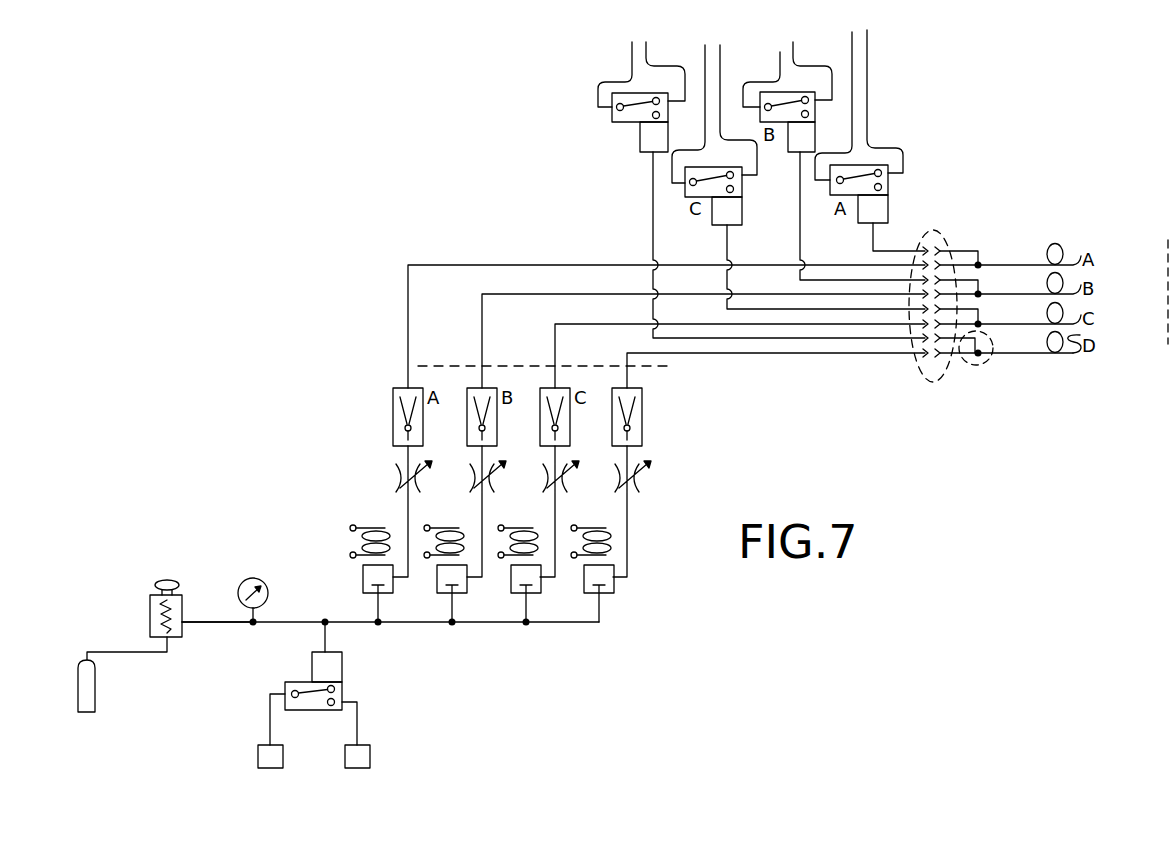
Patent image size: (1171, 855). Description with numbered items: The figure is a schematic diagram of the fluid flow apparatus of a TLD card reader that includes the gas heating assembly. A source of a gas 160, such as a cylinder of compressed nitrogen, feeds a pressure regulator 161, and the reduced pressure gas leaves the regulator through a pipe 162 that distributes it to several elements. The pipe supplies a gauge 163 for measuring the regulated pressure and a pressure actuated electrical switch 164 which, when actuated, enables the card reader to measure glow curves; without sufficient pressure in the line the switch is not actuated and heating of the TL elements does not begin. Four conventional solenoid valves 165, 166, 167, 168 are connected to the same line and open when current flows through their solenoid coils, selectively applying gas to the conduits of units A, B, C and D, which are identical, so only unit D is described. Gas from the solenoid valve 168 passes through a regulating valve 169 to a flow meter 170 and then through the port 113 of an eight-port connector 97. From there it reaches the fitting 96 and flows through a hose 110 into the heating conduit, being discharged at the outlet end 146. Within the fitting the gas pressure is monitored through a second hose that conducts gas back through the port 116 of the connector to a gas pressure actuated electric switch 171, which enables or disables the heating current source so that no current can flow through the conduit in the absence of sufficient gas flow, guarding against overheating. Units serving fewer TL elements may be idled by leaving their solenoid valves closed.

The fitting 96 is at (990, 338).
The eight-port connector 97 is at (952, 372).
The flexible hose 110 is at (1017, 354).
The port 113 is at (917, 362).
The port 116 is at (925, 337).
The outlet end 146 is at (1076, 336).
The source of a gas 160 is at (75, 695).
The pressure regulator 161 is at (150, 597).
The pipe 162 is at (283, 622).
The gauge 163 is at (275, 586).
The pressure actuated electrical switch 164 is at (342, 693).
The solenoid valve 165 is at (393, 592).
The solenoid valve 166 is at (467, 590).
The solenoid valve 167 is at (541, 590).
The solenoid valve 168 is at (613, 592).
The regulating valve 169 is at (633, 486).
The flow meter 170 is at (637, 430).
The gas pressure actuated electric switch 171 is at (612, 119).